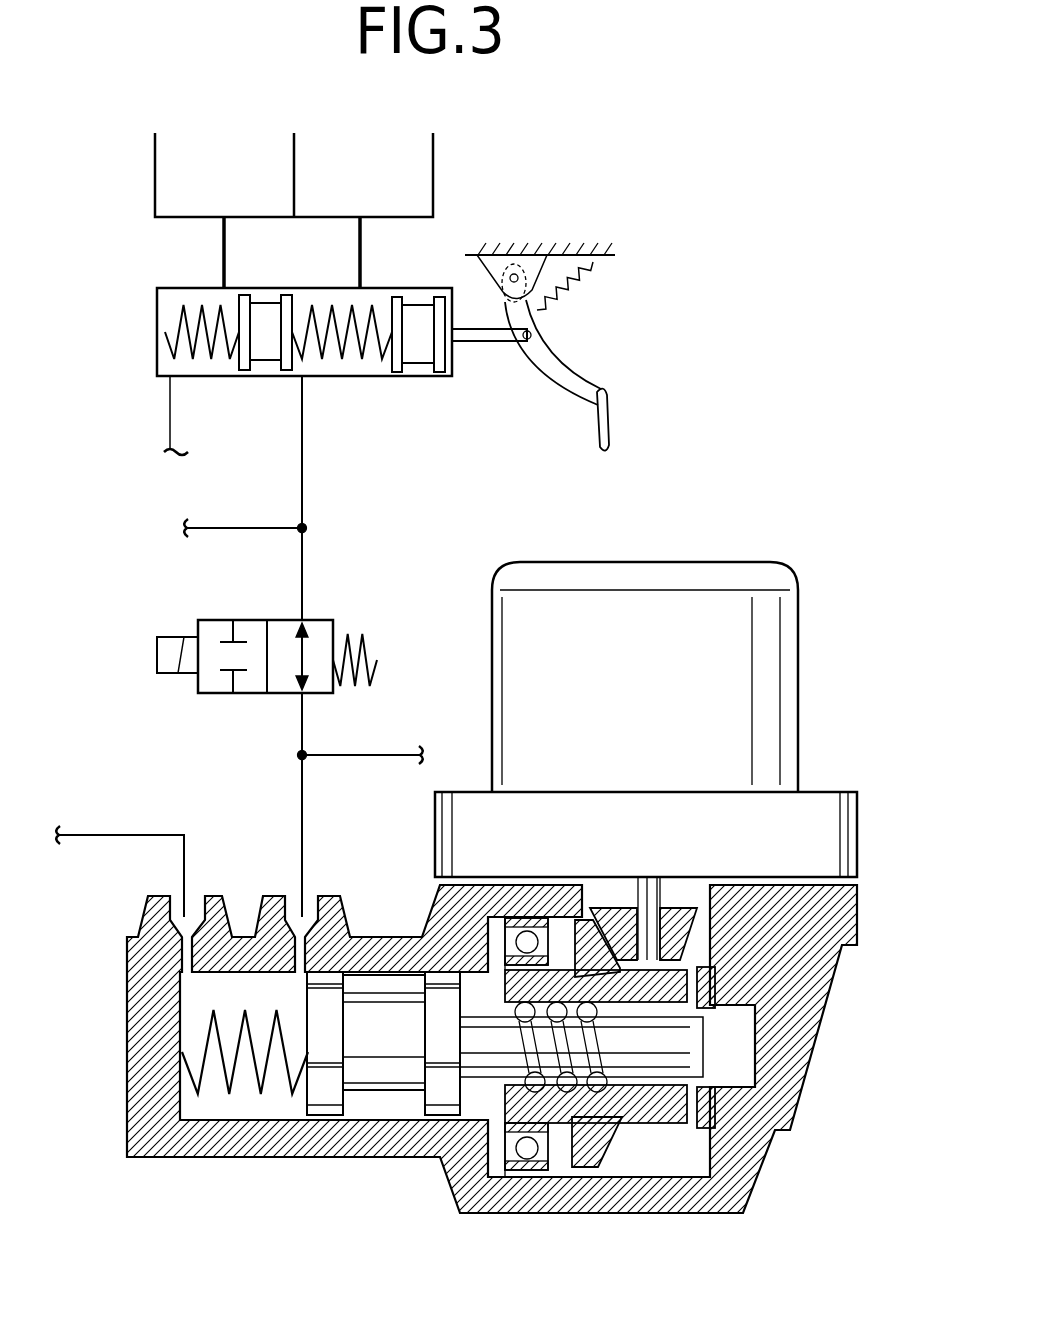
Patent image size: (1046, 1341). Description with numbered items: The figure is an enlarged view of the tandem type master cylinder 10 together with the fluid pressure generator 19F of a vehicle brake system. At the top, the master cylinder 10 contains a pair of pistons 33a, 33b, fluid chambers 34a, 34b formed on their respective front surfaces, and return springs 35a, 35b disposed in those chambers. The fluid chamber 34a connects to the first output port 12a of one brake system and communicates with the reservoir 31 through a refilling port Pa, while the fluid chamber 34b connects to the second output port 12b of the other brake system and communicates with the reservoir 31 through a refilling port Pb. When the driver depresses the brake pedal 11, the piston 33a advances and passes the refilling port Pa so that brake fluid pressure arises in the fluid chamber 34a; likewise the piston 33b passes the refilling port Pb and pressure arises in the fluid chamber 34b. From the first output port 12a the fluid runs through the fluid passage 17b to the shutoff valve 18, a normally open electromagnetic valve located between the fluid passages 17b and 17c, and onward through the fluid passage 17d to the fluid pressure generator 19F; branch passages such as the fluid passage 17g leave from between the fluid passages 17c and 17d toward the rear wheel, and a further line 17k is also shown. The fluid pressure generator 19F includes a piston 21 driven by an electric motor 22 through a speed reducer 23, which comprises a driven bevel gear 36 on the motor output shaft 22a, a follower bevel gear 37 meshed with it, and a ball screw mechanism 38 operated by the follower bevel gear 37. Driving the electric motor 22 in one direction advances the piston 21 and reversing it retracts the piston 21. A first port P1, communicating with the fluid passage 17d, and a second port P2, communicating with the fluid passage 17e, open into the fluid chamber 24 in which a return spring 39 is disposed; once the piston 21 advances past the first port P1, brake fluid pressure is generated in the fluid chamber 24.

The master cylinder 10 is at (153, 280).
The brake pedal 11 is at (567, 400).
The first output port 12a is at (293, 382).
The second output port 12b is at (165, 380).
The fluid passage 17b is at (303, 567).
The fluid passage 17c is at (302, 723).
The fluid passage 17d is at (303, 833).
The fluid passage 17e is at (122, 835).
The fluid passage 17g is at (367, 753).
The hydraulic line 17k is at (243, 523).
The shutoff valve 18 is at (262, 620).
The fluid pressure generator 19F is at (430, 1161).
The piston 21 is at (392, 1083).
The electric motor 22 is at (644, 566).
The output shaft 22a is at (642, 900).
The speed reducer 23 is at (657, 1149).
The fluid chamber 24 is at (230, 1002).
The reservoir 31 is at (433, 178).
The piston 33a is at (420, 323).
The piston 33b is at (260, 315).
The fluid chamber 34a is at (337, 363).
The fluid chamber 34b is at (173, 357).
The return spring 35a is at (360, 343).
The return spring 35b is at (160, 324).
The driven bevel gear 36 is at (677, 900).
The follower bevel gear 37 is at (623, 1113).
The ball screw mechanism 38 is at (565, 1085).
The return spring 39 is at (247, 1075).
The first port P1 is at (293, 903).
The second port P2 is at (180, 900).
The refilling port Pa is at (358, 218).
The refilling port Pb is at (224, 218).